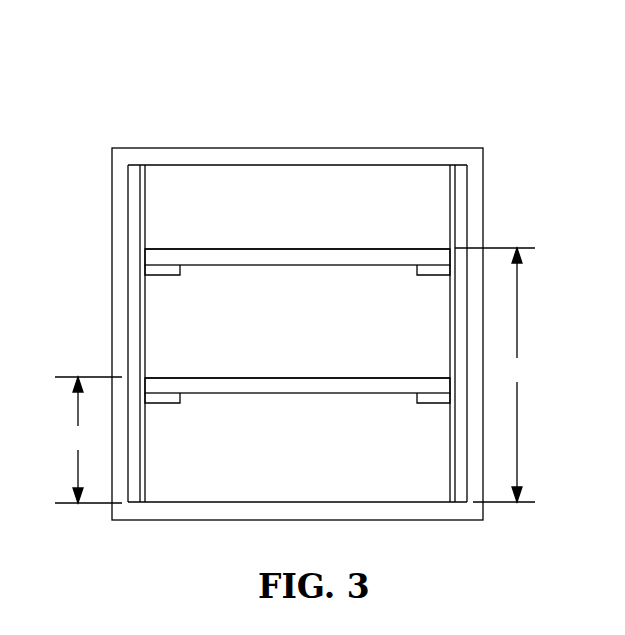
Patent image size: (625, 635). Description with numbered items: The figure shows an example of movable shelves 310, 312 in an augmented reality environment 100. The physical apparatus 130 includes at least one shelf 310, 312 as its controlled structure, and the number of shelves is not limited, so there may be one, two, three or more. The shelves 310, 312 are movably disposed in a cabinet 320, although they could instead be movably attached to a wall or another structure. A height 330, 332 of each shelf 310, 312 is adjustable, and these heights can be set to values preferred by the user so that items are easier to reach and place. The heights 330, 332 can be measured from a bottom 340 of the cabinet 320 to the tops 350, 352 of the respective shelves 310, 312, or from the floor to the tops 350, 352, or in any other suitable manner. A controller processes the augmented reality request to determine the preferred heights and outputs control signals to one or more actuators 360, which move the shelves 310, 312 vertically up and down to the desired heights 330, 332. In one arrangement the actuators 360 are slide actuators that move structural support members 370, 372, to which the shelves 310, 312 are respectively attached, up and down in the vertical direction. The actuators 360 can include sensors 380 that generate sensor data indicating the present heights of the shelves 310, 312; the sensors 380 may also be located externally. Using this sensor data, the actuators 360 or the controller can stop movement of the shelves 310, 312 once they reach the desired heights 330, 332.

The augmented reality environment 100 is at (332, 98).
The physical apparatus 130 is at (415, 126).
The movable shelf 310 is at (218, 388).
The movable shelf 312 is at (218, 260).
The cabinet 320 is at (120, 263).
The height 330 is at (88, 440).
The height 332 is at (495, 375).
The bottom 340 is at (375, 503).
The top 350 is at (328, 378).
The top 352 is at (328, 252).
The actuator 360 is at (135, 340).
The structural support member 370 is at (160, 400).
The structural support member 372 is at (160, 272).
The sensor 380 is at (142, 192).